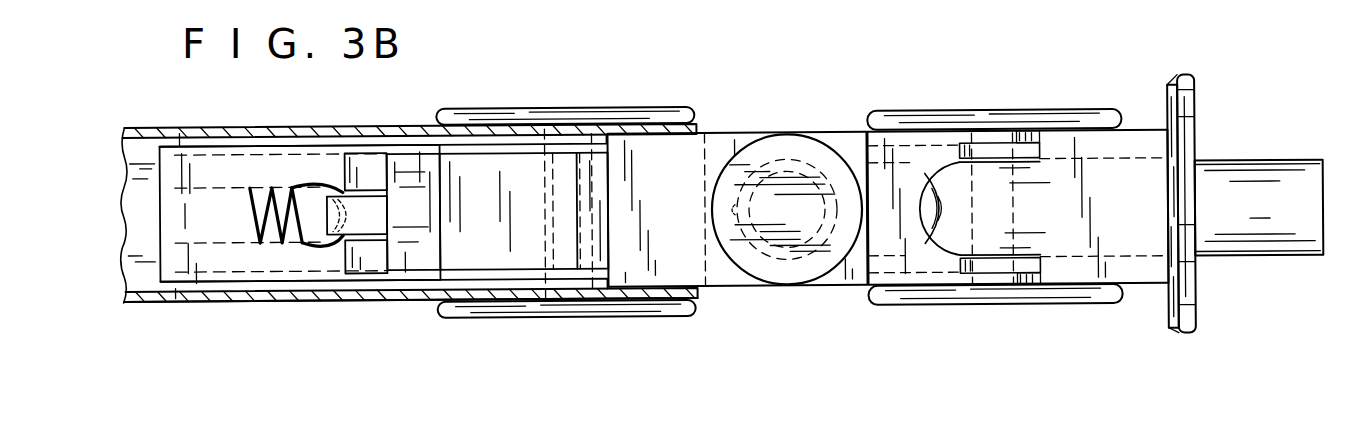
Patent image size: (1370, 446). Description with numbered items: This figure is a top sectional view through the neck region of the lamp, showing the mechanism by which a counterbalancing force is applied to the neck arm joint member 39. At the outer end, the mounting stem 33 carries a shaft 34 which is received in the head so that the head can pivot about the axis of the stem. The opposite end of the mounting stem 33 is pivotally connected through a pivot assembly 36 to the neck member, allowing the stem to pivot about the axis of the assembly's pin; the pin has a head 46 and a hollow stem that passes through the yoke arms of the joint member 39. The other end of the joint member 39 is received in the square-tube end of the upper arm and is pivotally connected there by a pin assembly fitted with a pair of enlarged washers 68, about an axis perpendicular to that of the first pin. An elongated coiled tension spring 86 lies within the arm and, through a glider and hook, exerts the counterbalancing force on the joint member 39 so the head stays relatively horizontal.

The mounting stem 33 is at (1132, 130).
The shaft 34 is at (1220, 160).
The pivot assembly 36 is at (967, 112).
The neck arm joint member 39 is at (696, 140).
The head 46 is at (797, 147).
The enlarged washers 68 is at (645, 108).
The coiled tension spring 86 is at (250, 207).